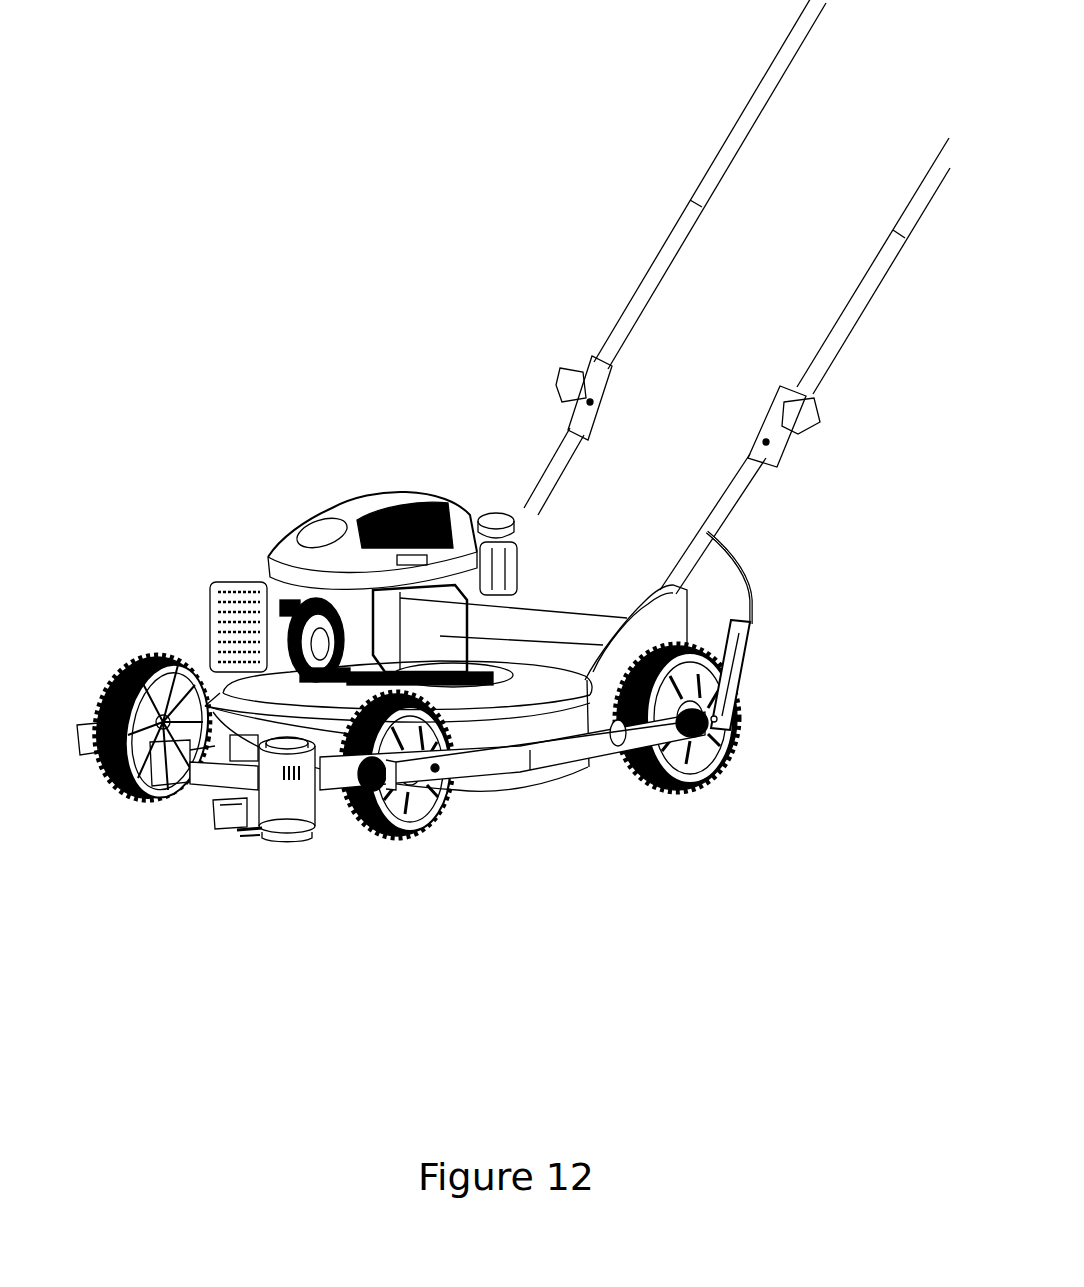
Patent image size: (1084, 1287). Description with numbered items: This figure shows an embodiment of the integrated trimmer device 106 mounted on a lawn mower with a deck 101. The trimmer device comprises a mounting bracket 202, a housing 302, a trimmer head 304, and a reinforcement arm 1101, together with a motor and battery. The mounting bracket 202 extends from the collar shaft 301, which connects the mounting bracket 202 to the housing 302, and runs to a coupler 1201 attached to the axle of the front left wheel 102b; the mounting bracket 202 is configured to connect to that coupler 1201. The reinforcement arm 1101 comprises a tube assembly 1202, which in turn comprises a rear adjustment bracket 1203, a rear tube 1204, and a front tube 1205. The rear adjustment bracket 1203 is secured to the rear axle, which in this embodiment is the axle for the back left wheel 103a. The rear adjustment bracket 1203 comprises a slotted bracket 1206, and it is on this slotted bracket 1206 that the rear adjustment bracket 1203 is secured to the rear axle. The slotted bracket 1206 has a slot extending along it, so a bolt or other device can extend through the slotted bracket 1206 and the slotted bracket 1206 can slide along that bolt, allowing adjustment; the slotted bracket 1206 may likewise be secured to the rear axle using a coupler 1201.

The mower deck 101 is at (367, 660).
The coupler 1201 is at (326, 530).
The slotted bracket 1206 is at (802, 572).
The rear adjustment bracket 1203 is at (807, 675).
The back left wheel 103a is at (736, 746).
The rear tube 1204 is at (720, 755).
The reinforcement arm 1101 is at (415, 778).
The front tube 1205 is at (548, 802).
The tube assembly 1202 is at (449, 822).
The mounting bracket 202 is at (414, 853).
The collar shaft 301 is at (368, 833).
The front left wheel 102b is at (429, 860).
The integrated trimmer device 106 is at (314, 911).
The housing 302 is at (160, 852).
The trimmer head 304 is at (166, 879).